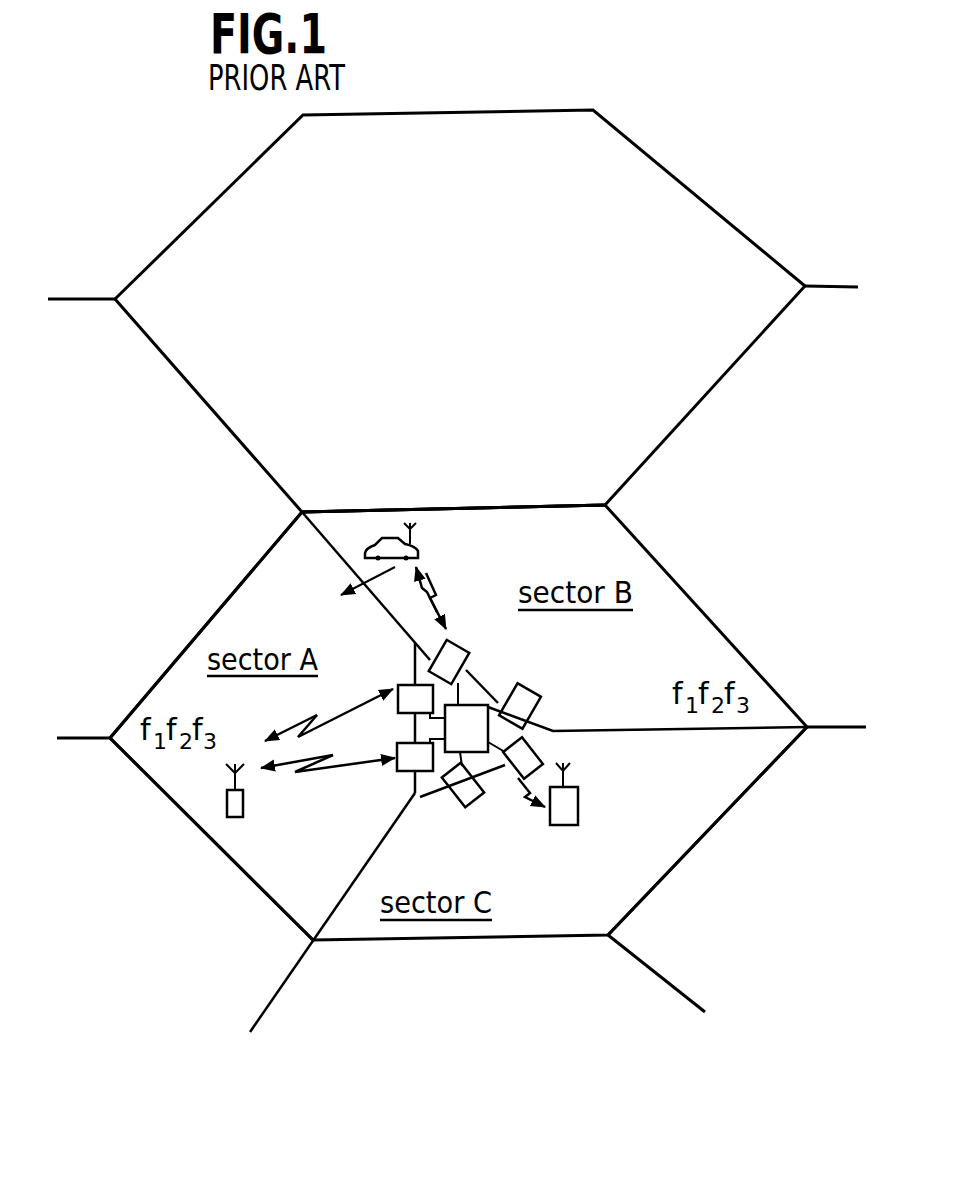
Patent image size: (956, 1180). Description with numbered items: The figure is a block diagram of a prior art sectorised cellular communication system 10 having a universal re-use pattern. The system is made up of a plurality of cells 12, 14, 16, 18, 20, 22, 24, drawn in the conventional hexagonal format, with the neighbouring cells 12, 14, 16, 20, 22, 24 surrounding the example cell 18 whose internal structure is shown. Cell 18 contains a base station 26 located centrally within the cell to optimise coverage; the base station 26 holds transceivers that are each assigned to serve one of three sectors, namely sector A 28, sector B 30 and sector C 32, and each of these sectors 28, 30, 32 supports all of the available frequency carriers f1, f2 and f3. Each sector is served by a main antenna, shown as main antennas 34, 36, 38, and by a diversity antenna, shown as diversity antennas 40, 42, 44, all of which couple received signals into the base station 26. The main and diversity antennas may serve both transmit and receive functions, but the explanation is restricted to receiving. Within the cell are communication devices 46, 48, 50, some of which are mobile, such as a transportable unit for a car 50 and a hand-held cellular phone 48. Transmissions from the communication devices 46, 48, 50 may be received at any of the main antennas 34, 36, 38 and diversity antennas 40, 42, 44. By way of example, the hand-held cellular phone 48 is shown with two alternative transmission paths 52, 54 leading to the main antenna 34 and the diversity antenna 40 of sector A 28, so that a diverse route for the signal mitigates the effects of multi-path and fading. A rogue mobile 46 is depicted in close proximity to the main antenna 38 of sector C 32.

The cellular communication system 10 is at (158, 201).
The cell 12 is at (81, 518).
The cell 14 is at (470, 468).
The cell 16 is at (802, 615).
The cell 18 is at (656, 865).
The cell 20 is at (238, 989).
The cell 22 is at (347, 997).
The cell 24 is at (713, 908).
The base station 26 is at (480, 700).
The sector A 28 is at (257, 568).
The sector B 30 is at (524, 512).
The sector C 32 is at (708, 828).
The main antenna 34 is at (397, 772).
The main antenna 36 is at (462, 643).
The main antenna 38 is at (513, 775).
The diversity antenna 40 is at (398, 686).
The diversity antenna 42 is at (540, 694).
The diversity antenna 44 is at (462, 808).
The rogue mobile 46 is at (578, 800).
The hand-held cellular phone 48 is at (233, 817).
The transportable unit for a car 50 is at (367, 535).
The transmission path 52 is at (327, 773).
The transmission path 54 is at (340, 716).